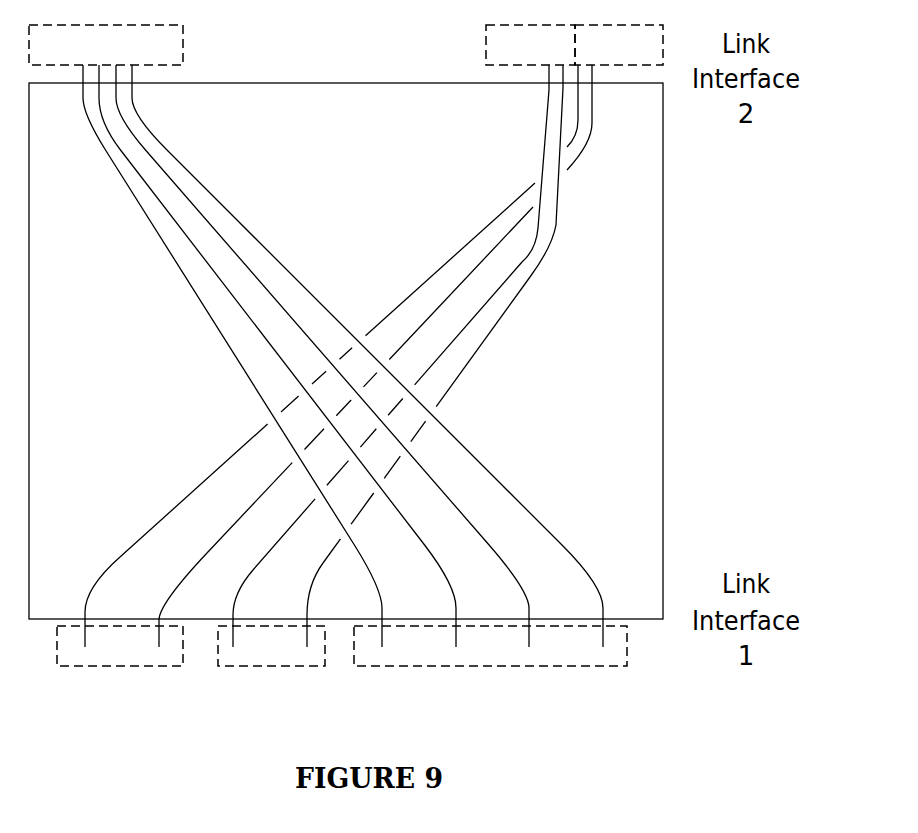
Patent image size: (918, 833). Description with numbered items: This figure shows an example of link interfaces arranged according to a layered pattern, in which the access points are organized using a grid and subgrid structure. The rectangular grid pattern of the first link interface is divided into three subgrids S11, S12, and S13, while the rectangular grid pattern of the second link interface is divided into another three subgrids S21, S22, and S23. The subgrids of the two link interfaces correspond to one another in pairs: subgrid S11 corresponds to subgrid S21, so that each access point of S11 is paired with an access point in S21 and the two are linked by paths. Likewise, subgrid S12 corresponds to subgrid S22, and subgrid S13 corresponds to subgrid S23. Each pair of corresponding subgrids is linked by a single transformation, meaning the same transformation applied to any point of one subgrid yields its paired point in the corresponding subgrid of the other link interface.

The first subgrid of the first link interface S11 is at (120, 646).
The second subgrid of the first link interface S12 is at (271, 646).
The third subgrid of the first link interface S13 is at (490, 646).
The first subgrid of the second link interface S21 is at (619, 45).
The second subgrid of the second link interface S22 is at (530, 45).
The third subgrid of the second link interface S23 is at (106, 45).